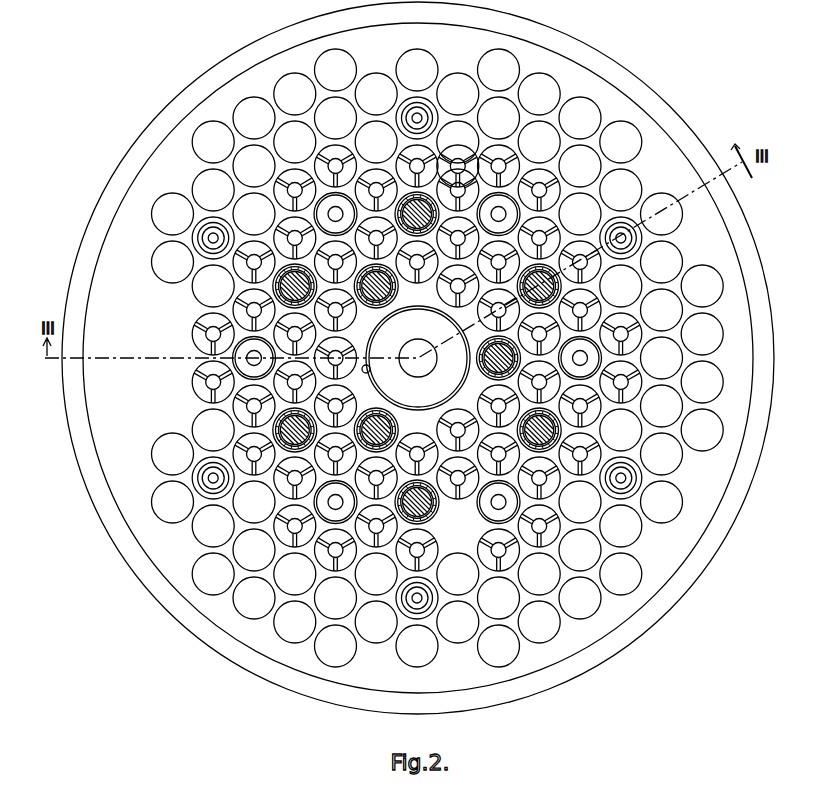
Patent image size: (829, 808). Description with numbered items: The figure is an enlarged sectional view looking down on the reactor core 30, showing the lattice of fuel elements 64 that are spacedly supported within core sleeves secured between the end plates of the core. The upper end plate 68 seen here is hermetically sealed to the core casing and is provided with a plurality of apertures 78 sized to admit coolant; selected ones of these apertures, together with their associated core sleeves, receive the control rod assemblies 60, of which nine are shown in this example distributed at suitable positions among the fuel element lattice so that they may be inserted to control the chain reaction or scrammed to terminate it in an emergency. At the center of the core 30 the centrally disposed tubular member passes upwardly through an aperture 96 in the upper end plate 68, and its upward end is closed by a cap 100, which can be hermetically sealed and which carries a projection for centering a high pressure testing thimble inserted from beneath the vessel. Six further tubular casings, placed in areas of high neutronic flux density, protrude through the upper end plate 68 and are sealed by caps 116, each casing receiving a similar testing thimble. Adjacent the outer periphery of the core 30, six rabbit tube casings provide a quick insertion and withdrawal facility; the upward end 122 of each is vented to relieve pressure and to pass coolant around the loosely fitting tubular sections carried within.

The reactor core 30 is at (696, 89).
The upper end plate 68 is at (597, 84).
The apertures 78 is at (630, 127).
The fuel elements 64 is at (456, 170).
The control rod assemblies 60 is at (410, 202).
The caps 116 is at (316, 215).
The upward end 122 is at (431, 113).
The cap 100 is at (443, 393).
The aperture 96 is at (371, 370).